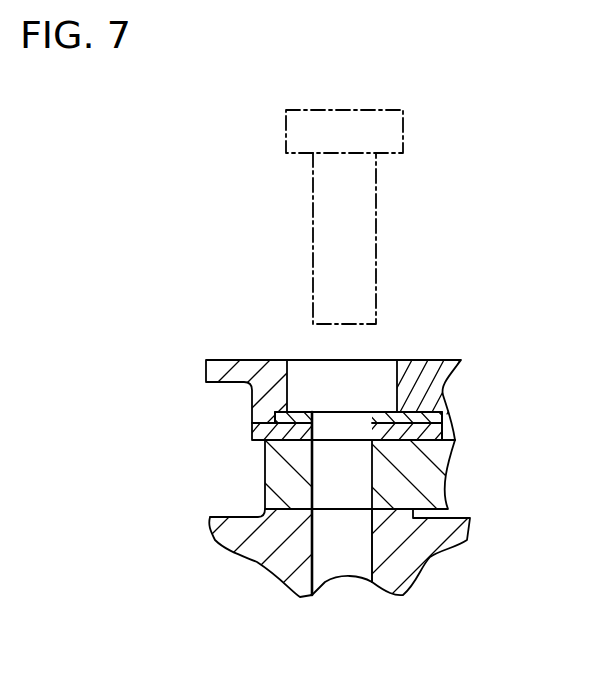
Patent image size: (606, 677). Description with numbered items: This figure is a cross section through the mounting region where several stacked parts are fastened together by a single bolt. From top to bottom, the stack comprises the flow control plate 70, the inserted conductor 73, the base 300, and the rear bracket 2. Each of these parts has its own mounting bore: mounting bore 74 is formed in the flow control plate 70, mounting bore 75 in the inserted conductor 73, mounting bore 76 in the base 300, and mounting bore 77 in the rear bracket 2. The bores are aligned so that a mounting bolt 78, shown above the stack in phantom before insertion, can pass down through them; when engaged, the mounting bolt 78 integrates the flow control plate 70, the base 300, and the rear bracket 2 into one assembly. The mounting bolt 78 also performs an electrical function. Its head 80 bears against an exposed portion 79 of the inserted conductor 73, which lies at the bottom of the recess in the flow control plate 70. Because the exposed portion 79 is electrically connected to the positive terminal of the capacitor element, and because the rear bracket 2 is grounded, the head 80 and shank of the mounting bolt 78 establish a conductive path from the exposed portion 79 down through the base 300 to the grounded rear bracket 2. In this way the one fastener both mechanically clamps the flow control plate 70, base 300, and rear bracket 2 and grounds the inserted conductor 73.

The rear bracket 2 is at (408, 563).
The flow control plate 70 is at (433, 407).
The inserted conductor 73 is at (442, 420).
The mounting bore 74 is at (288, 378).
The mounting bore 75 is at (290, 439).
The mounting bore 76 is at (310, 463).
The mounting bore 77 is at (325, 587).
The mounting bolt 78 is at (363, 238).
The exposed portion 79 is at (392, 400).
The head 80 is at (393, 125).
The base 300 is at (430, 472).